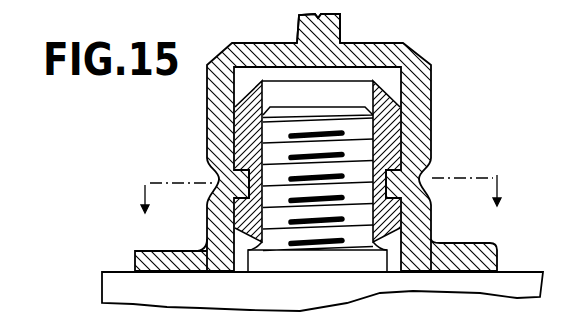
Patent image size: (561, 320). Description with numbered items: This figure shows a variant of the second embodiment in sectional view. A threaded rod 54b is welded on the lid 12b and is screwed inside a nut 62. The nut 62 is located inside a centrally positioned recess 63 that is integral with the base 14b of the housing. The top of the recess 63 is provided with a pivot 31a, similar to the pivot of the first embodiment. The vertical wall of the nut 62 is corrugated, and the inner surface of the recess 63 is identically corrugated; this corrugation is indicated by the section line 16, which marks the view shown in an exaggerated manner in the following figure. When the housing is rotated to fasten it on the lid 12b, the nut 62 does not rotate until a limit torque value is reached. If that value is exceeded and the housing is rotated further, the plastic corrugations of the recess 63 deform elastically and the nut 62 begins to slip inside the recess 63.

The lid 12b is at (133, 288).
The base of the housing 14b is at (135, 250).
The FIG. 16 section line 16 is at (325, 208).
The pivot 31a is at (328, 30).
The threaded rod 54b is at (280, 141).
The nut 62 is at (250, 107).
The recess 63 is at (431, 110).